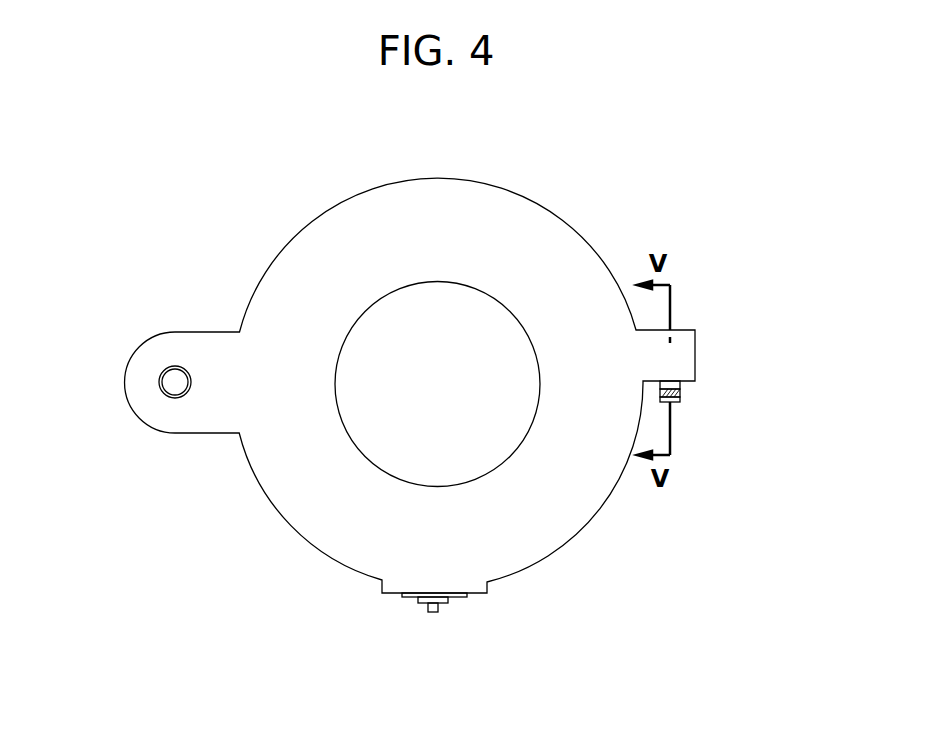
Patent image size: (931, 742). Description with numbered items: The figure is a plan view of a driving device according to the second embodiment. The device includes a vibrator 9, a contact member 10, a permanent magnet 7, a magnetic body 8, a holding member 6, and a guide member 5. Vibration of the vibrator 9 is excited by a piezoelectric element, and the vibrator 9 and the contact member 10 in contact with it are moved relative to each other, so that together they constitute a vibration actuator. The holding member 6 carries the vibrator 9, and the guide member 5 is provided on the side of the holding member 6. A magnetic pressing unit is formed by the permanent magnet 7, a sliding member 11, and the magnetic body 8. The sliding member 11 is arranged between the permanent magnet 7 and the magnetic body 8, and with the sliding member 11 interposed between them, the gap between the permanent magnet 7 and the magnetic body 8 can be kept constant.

The guide member 5 is at (178, 383).
The holding member 6 is at (440, 191).
The permanent magnet 7 is at (681, 384).
The magnetic body 8 is at (681, 399).
The vibrator 9 is at (448, 600).
The contact member 10 is at (436, 613).
The sliding member 11 is at (681, 392).